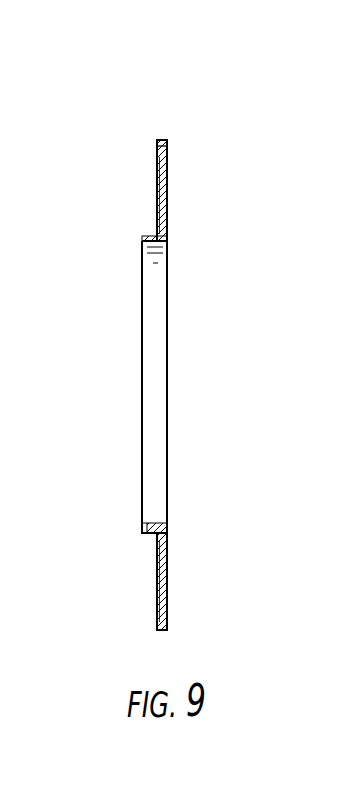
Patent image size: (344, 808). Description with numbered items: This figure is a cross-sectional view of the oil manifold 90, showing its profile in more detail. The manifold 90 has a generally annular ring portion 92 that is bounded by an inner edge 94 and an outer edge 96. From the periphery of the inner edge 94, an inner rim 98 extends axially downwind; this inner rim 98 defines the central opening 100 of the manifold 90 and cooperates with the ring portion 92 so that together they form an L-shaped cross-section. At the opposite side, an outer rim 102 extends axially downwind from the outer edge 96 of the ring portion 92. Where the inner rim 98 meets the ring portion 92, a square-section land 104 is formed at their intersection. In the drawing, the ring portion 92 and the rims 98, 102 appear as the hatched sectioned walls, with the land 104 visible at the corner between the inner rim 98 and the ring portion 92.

The manifold 90 is at (215, 86).
The annular ring portion 92 is at (168, 190).
The inner edge 94 is at (173, 254).
The outer edge 96 is at (168, 130).
The inner rim 98 is at (147, 243).
The central opening 100 is at (122, 366).
The outer rim 102 is at (157, 622).
The square-section land 104 is at (158, 237).